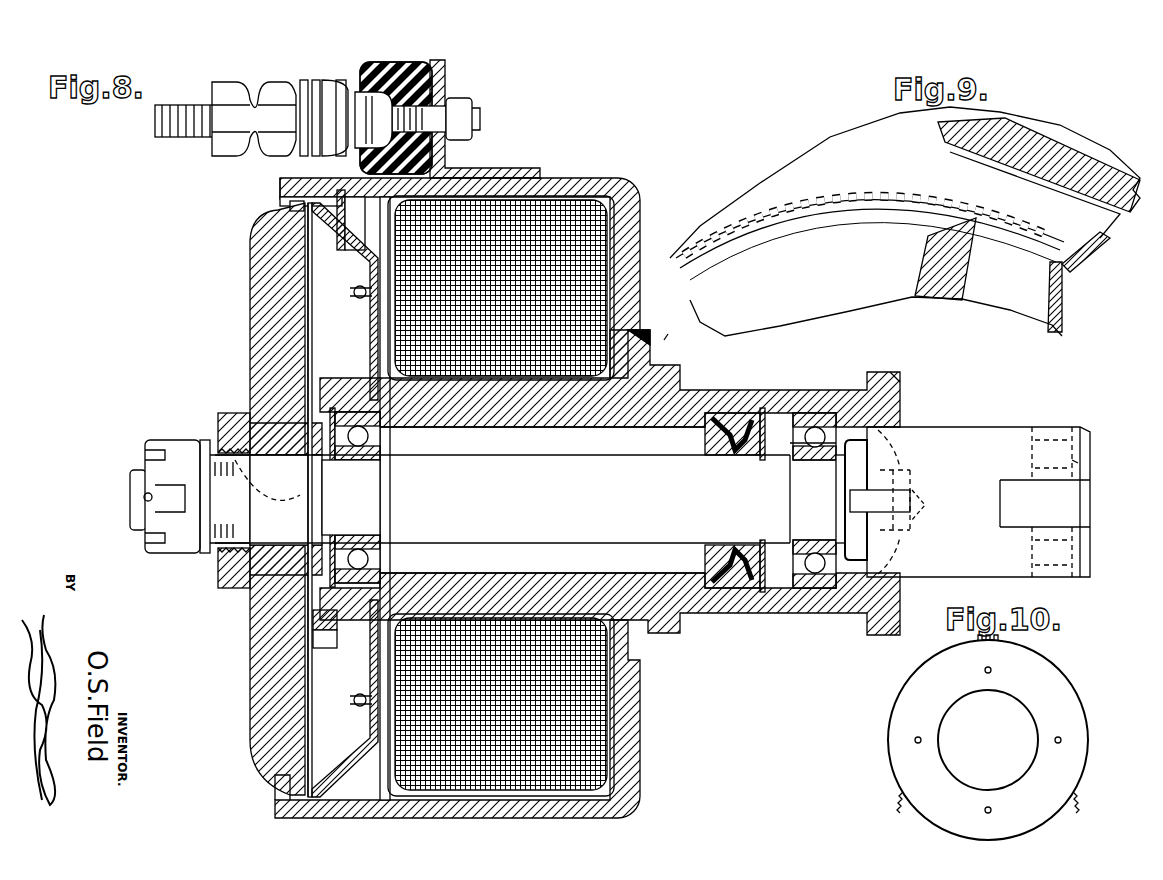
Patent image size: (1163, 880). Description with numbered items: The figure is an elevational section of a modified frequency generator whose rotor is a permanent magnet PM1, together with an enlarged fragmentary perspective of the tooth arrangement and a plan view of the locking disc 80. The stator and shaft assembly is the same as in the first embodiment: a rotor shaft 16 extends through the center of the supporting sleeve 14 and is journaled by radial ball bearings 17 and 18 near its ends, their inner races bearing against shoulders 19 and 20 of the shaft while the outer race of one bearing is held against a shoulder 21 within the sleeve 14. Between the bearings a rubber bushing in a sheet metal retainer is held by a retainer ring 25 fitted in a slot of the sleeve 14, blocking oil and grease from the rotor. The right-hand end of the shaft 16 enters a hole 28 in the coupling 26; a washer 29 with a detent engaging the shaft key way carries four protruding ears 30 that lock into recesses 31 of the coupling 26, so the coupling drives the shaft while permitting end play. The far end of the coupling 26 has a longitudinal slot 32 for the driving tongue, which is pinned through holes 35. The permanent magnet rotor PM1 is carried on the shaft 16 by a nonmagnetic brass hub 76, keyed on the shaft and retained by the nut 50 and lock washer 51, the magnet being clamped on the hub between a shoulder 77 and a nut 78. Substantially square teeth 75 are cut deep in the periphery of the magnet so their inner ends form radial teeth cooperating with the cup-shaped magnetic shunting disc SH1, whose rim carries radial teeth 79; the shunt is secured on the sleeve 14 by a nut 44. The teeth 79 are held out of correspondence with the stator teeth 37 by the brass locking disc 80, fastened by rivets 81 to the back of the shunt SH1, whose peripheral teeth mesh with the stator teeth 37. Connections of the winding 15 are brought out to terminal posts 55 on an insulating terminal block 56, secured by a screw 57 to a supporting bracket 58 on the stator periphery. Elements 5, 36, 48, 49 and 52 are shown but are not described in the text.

In FIG. 8, the stator housing 5 is at (608, 184).
In FIG. 9, the stator housing 5 is at (802, 162).
In FIG. 8, the supporting sleeve 14 is at (790, 405).
In FIG. 8, the winding 15 is at (606, 228).
In FIG. 8, the rotor shaft 16 is at (132, 482).
In FIG. 8, the radial ball bearing 17 is at (380, 558).
In FIG. 8, the radial ball bearing 18 is at (793, 436).
In FIG. 8, the shoulder 19 is at (380, 458).
In FIG. 8, the shoulder 20 is at (793, 460).
In FIG. 8, the shoulder 21 is at (380, 424).
In FIG. 8, the retainer ring 25 is at (752, 430).
In FIG. 8, the coupling 26 is at (993, 428).
In FIG. 8, the hole 28 is at (912, 492).
In FIG. 8, the washer 29 is at (838, 522).
In FIG. 8, the protruding ears 30 is at (850, 440).
In FIG. 8, the recesses 31 is at (905, 524).
In FIG. 8, the longitudinal slot 32 is at (1046, 528).
In FIG. 8, the holes 35 is at (1080, 464).
In FIG. 8, the corner 36 is at (640, 345).
In FIG. 9, the corner 36 is at (672, 341).
In FIG. 8, the teeth of the stator 37 is at (282, 200).
In FIG. 9, the teeth of the stator 37 is at (690, 270).
In FIG. 8, the nut 44 is at (328, 648).
In FIG. 8, the bore 48 is at (300, 495).
In FIG. 8, the spacer 49 is at (338, 510).
In FIG. 8, the nut 50 is at (178, 548).
In FIG. 8, the lock washer 51 is at (205, 553).
In FIG. 8, the cotter pin 52 is at (144, 498).
In FIG. 8, the terminal posts 55 is at (156, 122).
In FIG. 8, the terminal block 56 is at (436, 74).
In FIG. 8, the screw 57 is at (474, 120).
In FIG. 8, the supporting bracket 58 is at (505, 176).
In FIG. 8, the teeth 75 is at (290, 206).
In FIG. 9, the teeth 75 is at (945, 210).
In FIG. 8, the hub 76 is at (220, 434).
In FIG. 8, the shoulder 77 is at (300, 440).
In FIG. 8, the nut 78 is at (230, 588).
In FIG. 8, the radial teeth 79 is at (320, 222).
In FIG. 9, the radial teeth 79 is at (1084, 252).
In FIG. 8, the locking disc 80 is at (384, 740).
In FIG. 9, the locking disc 80 is at (1070, 228).
In FIG. 10, the locking disc 80 is at (1082, 700).
In FIG. 8, the rivets 81 is at (354, 702).
In FIG. 8, the permanent magnet rotor PM1 is at (250, 278).
In FIG. 9, the permanent magnet rotor PM1 is at (885, 296).
In FIG. 8, the magnetic shunting disc SH1 is at (370, 324).
In FIG. 9, the magnetic shunting disc SH1 is at (1014, 300).